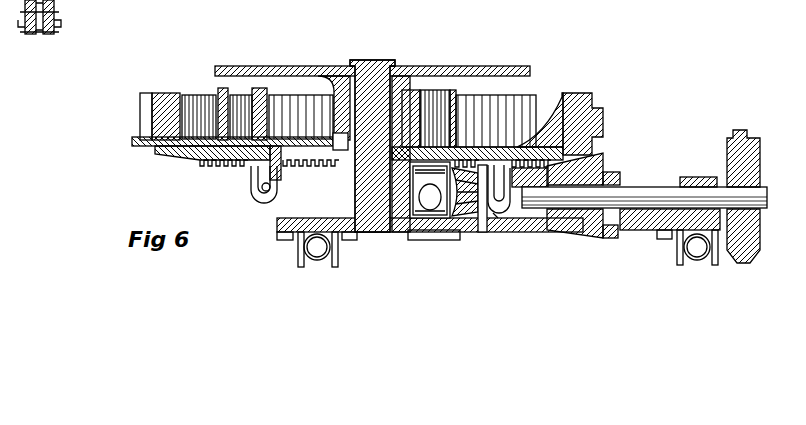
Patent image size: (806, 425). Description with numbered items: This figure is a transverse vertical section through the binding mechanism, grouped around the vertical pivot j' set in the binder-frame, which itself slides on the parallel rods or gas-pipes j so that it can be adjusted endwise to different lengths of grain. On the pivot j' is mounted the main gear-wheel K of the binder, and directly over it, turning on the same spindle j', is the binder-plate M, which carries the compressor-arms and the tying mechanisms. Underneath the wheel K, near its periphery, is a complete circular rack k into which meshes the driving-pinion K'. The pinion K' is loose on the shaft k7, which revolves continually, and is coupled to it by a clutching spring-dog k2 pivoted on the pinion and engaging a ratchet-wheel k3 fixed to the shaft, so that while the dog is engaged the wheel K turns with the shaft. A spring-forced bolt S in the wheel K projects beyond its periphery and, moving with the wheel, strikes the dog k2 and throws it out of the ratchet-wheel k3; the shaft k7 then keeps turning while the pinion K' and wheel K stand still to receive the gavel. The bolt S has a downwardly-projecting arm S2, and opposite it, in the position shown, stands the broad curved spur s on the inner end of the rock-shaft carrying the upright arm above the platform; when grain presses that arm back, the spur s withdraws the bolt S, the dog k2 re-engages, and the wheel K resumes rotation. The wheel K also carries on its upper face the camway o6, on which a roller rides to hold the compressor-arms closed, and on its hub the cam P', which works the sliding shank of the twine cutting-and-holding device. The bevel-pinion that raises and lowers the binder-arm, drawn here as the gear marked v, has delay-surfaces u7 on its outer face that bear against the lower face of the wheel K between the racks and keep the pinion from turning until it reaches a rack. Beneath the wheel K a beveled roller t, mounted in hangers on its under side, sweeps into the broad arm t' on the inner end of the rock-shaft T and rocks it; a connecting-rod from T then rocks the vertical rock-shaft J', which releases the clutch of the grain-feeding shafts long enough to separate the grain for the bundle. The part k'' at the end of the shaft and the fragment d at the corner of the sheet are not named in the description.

The wheel d is at (45, 17).
The camway o6 is at (171, 92).
The vertical rock-shaft J' is at (372, 134).
The binder-plate M is at (372, 61).
The cam P' is at (359, 117).
The main gear-wheel K is at (586, 139).
The bolt S is at (131, 143).
The circular rack k is at (353, 169).
The downwardly-projecting arm S2 is at (282, 175).
The beveled roller t is at (256, 193).
The parallel rods or gas-pipes j is at (317, 257).
The delay-surfaces u7 is at (432, 241).
The bevel gear v is at (465, 226).
The curved spur s is at (479, 222).
The broad arm t' is at (508, 218).
The rock-shaft T is at (495, 226).
The driving-pinion K' is at (575, 245).
The clutching spring-dog k2 is at (612, 238).
The ratchet-wheel k3 is at (614, 172).
The shaft k7 is at (644, 188).
The flange k'' is at (755, 196).
The vertical pivot j' is at (670, 249).